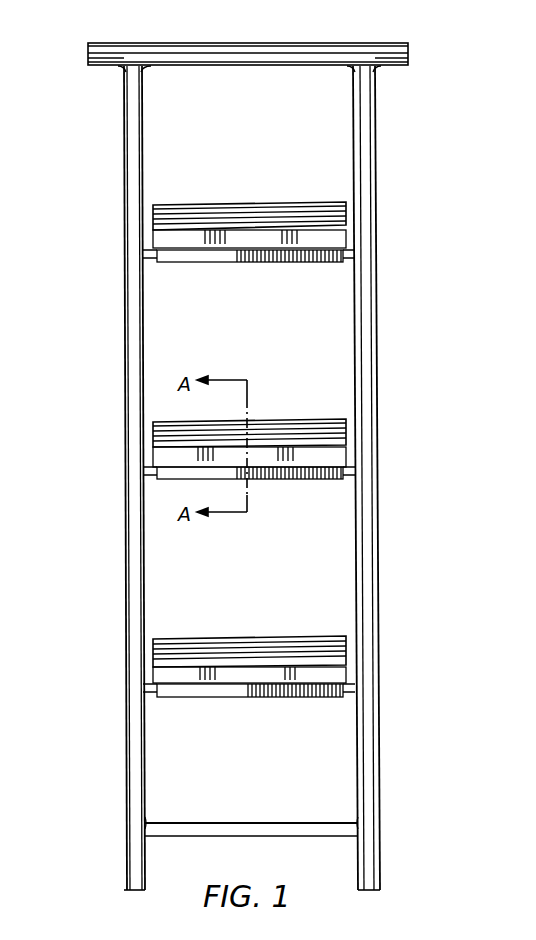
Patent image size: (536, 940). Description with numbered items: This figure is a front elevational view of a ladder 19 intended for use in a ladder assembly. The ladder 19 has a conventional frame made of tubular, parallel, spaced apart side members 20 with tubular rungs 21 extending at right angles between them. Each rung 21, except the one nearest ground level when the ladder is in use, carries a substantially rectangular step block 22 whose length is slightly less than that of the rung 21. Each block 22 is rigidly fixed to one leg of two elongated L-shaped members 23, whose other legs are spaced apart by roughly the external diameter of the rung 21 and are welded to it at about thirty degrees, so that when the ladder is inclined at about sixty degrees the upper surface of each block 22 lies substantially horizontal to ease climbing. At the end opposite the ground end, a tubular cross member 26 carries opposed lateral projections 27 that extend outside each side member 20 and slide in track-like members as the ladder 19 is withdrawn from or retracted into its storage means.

The ladder 19 is at (255, 466).
The side members 20 is at (126, 358).
The rungs 21 is at (150, 263).
The step block 22 is at (248, 210).
The L-shaped members 23 is at (232, 263).
The cross member 26 is at (232, 64).
The lateral projections 27 is at (100, 64).